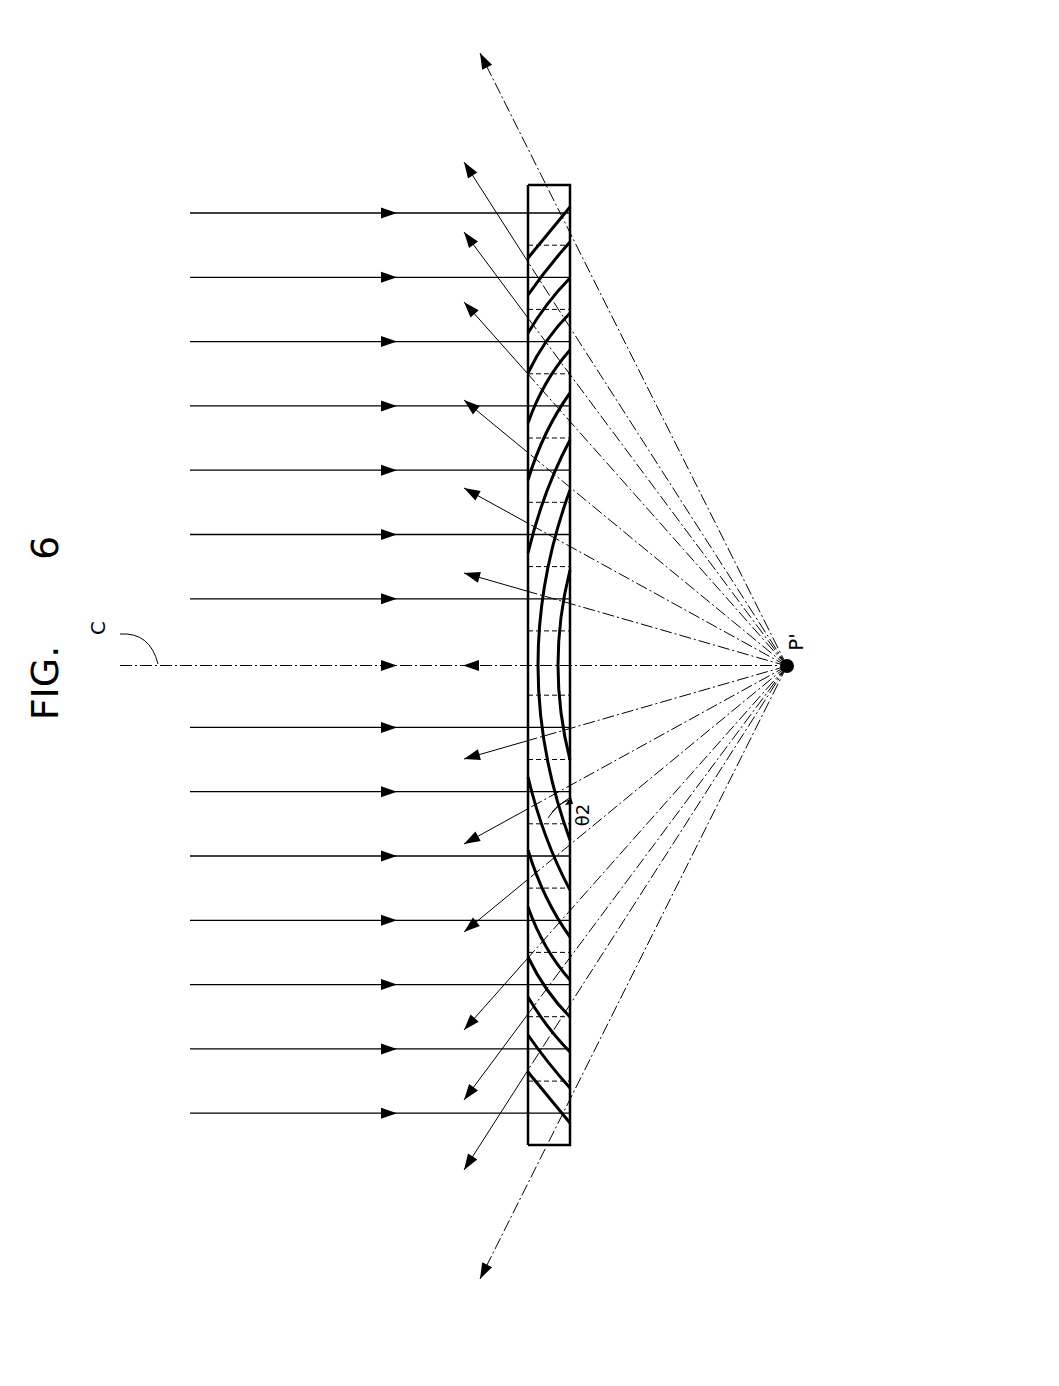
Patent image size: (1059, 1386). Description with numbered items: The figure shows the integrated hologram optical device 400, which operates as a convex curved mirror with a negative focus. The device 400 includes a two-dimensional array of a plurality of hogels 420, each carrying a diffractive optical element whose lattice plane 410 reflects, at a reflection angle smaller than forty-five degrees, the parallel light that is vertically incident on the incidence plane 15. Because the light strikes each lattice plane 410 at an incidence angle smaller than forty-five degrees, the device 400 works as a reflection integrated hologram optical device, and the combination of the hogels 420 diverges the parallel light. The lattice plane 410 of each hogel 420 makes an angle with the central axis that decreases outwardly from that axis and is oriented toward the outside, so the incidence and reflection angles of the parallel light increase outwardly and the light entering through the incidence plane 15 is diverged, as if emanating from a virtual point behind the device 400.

The integrated hologram optical device 400 is at (581, 647).
The lattice plane 410 is at (556, 1131).
The hogel 420 is at (556, 273).
The incidence plane 15 is at (527, 1133).